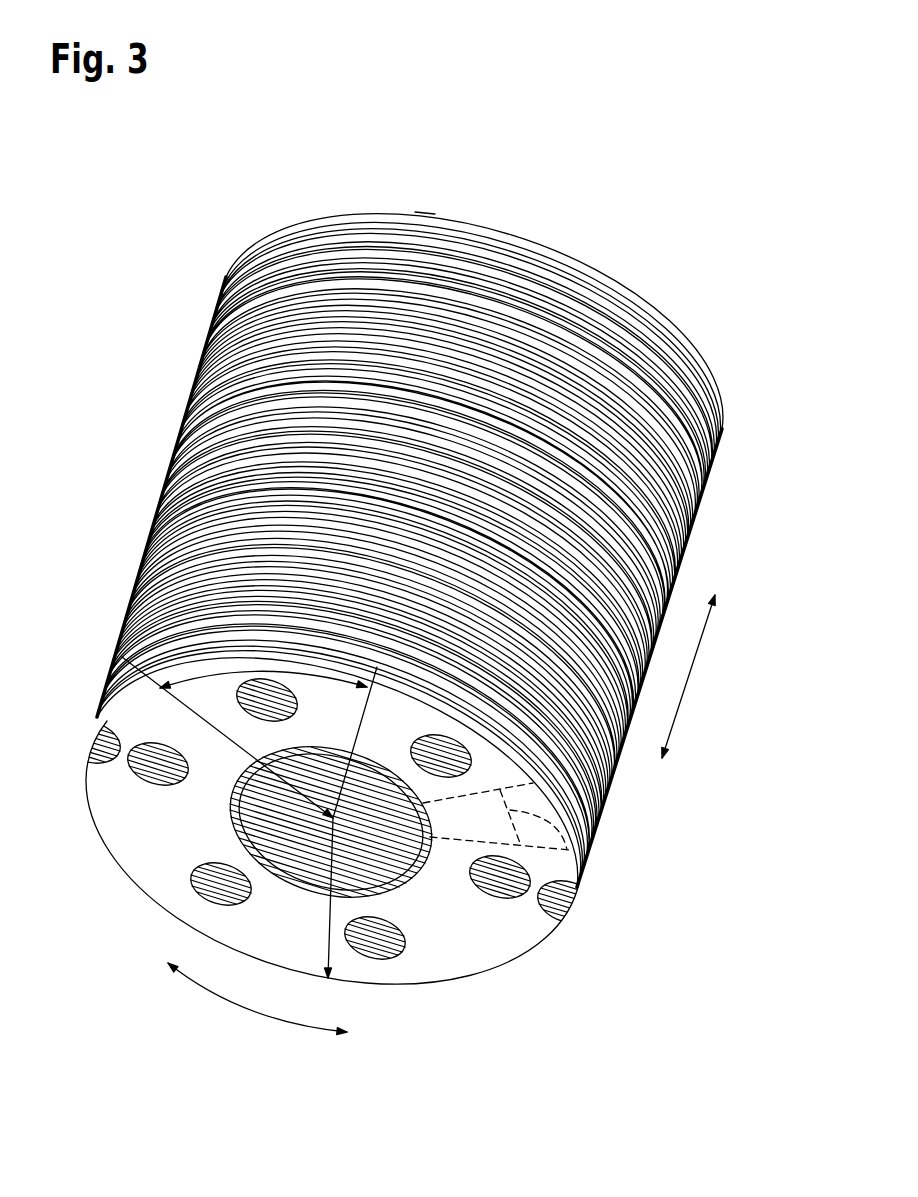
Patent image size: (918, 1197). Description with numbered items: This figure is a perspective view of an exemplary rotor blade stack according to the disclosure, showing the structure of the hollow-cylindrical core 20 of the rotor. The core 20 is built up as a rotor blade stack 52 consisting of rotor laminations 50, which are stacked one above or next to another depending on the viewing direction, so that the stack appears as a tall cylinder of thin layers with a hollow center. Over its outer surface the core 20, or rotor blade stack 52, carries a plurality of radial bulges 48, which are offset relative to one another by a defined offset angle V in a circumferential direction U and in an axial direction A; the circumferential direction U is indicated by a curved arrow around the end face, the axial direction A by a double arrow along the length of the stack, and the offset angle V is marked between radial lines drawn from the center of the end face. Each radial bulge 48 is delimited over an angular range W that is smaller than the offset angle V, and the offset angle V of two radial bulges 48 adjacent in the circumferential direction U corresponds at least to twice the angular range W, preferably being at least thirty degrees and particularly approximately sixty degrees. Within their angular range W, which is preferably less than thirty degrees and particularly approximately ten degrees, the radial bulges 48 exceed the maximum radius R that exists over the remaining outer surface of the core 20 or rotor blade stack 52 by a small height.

The hollow-cylindrical core 20 is at (314, 188).
The radial bulge 48 is at (495, 222).
The rotor blade stack 52 is at (425, 220).
The rotor lamination 50 is at (143, 833).
The offset angle V is at (208, 673).
The maximum radius R is at (332, 937).
The circumferential direction U is at (257, 1004).
The axial direction A is at (689, 676).
The angular range W is at (587, 867).